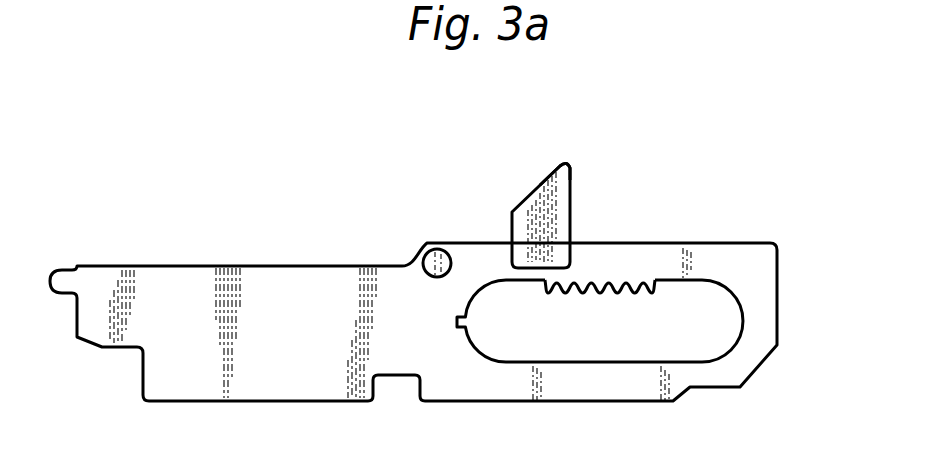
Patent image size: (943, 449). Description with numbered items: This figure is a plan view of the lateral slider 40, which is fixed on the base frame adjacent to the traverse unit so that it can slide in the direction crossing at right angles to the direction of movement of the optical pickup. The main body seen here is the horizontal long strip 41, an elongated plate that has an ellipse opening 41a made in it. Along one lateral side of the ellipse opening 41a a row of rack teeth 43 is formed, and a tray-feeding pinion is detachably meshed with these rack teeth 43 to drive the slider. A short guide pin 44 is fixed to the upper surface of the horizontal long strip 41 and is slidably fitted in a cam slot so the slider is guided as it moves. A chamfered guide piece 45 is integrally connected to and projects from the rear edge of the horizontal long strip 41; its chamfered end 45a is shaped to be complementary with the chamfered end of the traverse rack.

The lateral slider 40 is at (733, 242).
The horizontal long strip 41 is at (288, 278).
The ellipse opening 41a is at (743, 314).
The rack teeth 43 is at (606, 299).
The short guide pin 44 is at (432, 250).
The chamfered guide piece 45 is at (530, 205).
The chamfered end 45a is at (543, 173).